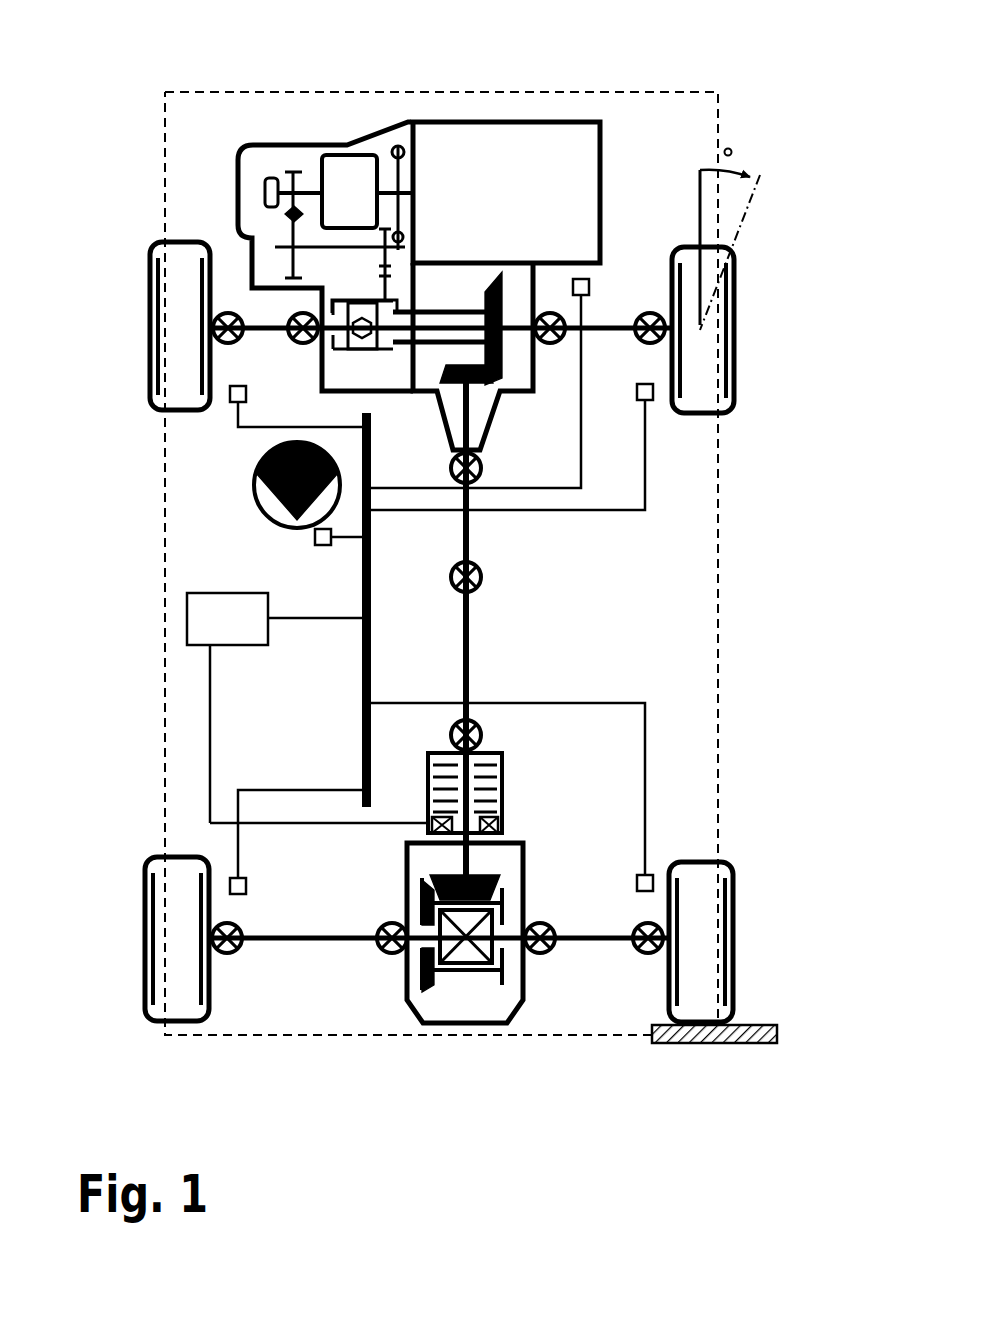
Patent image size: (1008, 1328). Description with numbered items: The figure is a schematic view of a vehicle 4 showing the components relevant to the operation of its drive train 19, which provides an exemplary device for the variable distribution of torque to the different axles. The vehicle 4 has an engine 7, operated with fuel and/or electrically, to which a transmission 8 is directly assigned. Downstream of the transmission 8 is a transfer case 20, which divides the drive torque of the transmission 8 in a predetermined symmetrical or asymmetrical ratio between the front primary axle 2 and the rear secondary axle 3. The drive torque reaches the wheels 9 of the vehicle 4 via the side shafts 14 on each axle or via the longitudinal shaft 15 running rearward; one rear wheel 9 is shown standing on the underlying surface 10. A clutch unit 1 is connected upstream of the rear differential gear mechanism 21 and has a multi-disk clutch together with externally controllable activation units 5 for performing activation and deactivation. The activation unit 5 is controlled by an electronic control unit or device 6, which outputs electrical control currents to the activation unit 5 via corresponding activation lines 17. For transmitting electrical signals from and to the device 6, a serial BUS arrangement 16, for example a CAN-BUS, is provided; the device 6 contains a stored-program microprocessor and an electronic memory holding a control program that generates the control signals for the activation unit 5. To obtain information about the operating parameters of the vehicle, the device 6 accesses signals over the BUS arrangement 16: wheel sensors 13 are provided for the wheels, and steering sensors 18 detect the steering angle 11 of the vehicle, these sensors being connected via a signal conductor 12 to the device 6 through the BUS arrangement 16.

The clutch unit 1 is at (502, 793).
The primary axle 2 is at (772, 328).
The secondary axle 3 is at (770, 948).
The vehicle 4 is at (720, 623).
The activation unit 5 is at (428, 828).
The device 6 is at (187, 622).
The engine 7 is at (468, 130).
The transmission 8 is at (282, 147).
The wheel 9 is at (150, 262).
The underlying surface 10 is at (770, 1024).
The steering angle 11 is at (731, 152).
The signal conductor 12 is at (560, 703).
The wheel sensor 13 is at (228, 400).
The side shaft 14 is at (590, 326).
The longitudinal shaft 15 is at (470, 640).
The BUS arrangement 16 is at (362, 673).
The activation line 17 is at (208, 723).
The steering sensor 18 is at (315, 540).
The drive train 19 is at (677, 553).
The transfer case 20 is at (510, 363).
The differential gear mechanism 21 is at (487, 1000).